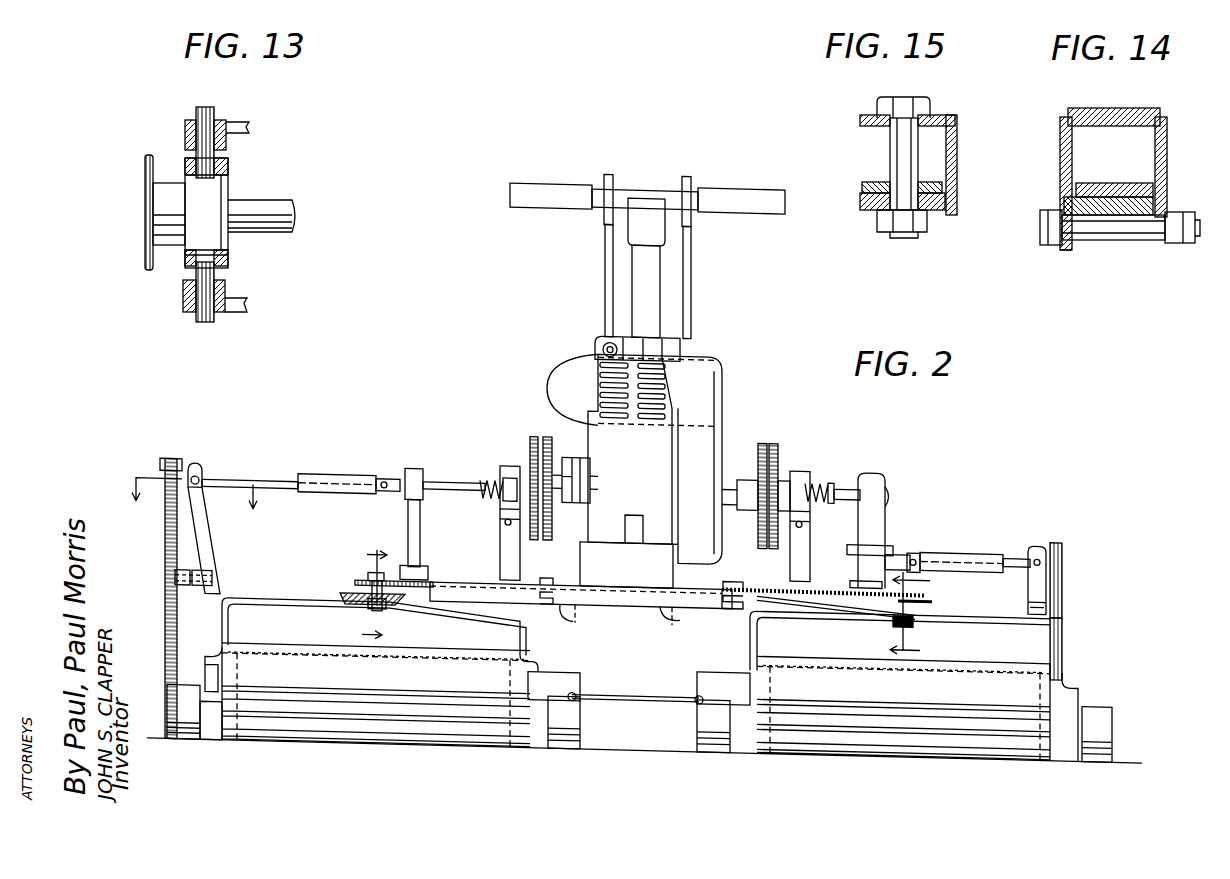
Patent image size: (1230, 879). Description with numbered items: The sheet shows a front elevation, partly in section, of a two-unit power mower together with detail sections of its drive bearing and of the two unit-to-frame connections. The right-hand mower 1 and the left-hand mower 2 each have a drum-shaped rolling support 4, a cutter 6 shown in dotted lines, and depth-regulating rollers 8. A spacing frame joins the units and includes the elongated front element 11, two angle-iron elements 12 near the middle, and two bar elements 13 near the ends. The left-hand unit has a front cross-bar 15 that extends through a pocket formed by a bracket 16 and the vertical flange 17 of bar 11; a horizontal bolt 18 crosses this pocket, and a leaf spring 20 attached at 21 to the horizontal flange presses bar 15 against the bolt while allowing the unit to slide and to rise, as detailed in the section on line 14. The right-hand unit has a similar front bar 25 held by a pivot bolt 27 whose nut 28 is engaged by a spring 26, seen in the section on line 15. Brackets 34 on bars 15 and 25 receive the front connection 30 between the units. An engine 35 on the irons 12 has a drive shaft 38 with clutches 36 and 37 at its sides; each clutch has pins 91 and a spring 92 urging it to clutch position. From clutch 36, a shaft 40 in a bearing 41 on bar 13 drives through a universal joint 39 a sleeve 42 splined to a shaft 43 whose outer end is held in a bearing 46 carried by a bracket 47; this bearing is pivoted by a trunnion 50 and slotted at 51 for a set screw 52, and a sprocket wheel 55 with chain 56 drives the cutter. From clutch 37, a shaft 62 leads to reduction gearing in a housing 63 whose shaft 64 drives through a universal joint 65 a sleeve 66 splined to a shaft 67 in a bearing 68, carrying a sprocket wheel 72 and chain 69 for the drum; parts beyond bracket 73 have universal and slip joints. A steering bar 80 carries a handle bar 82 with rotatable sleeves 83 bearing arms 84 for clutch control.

In FIG. 2, the right-hand mower 1 is at (350, 736).
In FIG. 2, the left-hand mower 2 is at (888, 733).
In FIG. 2, the rolling support 4 is at (270, 594).
In FIG. 2, the cutter 6 is at (270, 647).
In FIG. 2, the rollers 8 is at (185, 739).
In FIG. 15, the front frame element 11 is at (957, 131).
In FIG. 14, the front frame element 11 is at (1165, 127).
In FIG. 2, the front frame element 11 is at (630, 595).
In FIG. 2, the angle iron frame elements 12 is at (575, 597).
In FIG. 2, the bar frame elements 13 is at (440, 554).
In FIG. 2, the section line 14— 14 is at (942, 618).
In FIG. 14, the cross-bar 15 is at (1122, 216).
In FIG. 2, the cross-bar 15 is at (985, 580).
In FIG. 14, the bracket 16 is at (1167, 173).
In FIG. 2, the bracket 16 is at (932, 582).
In FIG. 14, the vertical flange 17 is at (1061, 166).
In FIG. 2, the vertical flange 17 is at (710, 593).
In FIG. 14, the bolt 18 is at (1090, 246).
In FIG. 2, the bolt 18 is at (893, 603).
In FIG. 14, the leaf spring 20 is at (1115, 183).
In FIG. 2, the leaf spring 20 is at (790, 584).
In FIG. 2, the spring attachment 21 is at (548, 568).
In FIG. 15, the front bar 25 is at (868, 206).
In FIG. 2, the front bar 25 is at (247, 594).
In FIG. 15, the spring 26 is at (870, 187).
In FIG. 2, the spring 26 is at (350, 591).
In FIG. 15, the pivot bolt 27 is at (918, 100).
In FIG. 2, the pivot bolt 27 is at (370, 567).
In FIG. 2, the nut 28 is at (368, 598).
In FIG. 2, the front connection 30 is at (635, 689).
In FIG. 2, the brackets 34 is at (580, 676).
In FIG. 2, the engine 35 is at (658, 437).
In FIG. 2, the clutch 36 is at (530, 427).
In FIG. 2, the clutch 37 is at (773, 427).
In FIG. 2, the drive shaft 38 is at (580, 479).
In FIG. 2, the universal joint 39 is at (384, 471).
In FIG. 2, the shaft 40 is at (440, 474).
In FIG. 2, the bearing 41 is at (414, 460).
In FIG. 2, the sleeve 42 is at (318, 471).
In FIG. 13, the shaft 43 is at (287, 211).
In FIG. 2, the shaft 43 is at (258, 478).
In FIG. 13, the bearing 46 is at (218, 186).
In FIG. 2, the bearing 46 is at (197, 462).
In FIG. 13, the bracket 47 is at (232, 310).
In FIG. 2, the bracket 47 is at (205, 512).
In FIG. 13, the trunnion 50 is at (195, 143).
In FIG. 13, the slot 51 is at (222, 264).
In FIG. 13, the set screw 52 is at (195, 288).
In FIG. 13, the sprocket wheel 55 is at (143, 249).
In FIG. 2, the sprocket wheel 55 is at (167, 462).
In FIG. 2, the chain 56 is at (167, 541).
In FIG. 2, the shaft 62 is at (846, 470).
In FIG. 2, the housing 63 is at (870, 455).
In FIG. 2, the shaft 64 is at (895, 536).
In FIG. 2, the universal joint 65 is at (917, 536).
In FIG. 2, the sleeve 66 is at (948, 533).
In FIG. 2, the shaft 67 is at (1010, 537).
In FIG. 2, the bearing 68 is at (1037, 526).
In FIG. 2, the chain 69 is at (1063, 573).
In FIG. 2, the sprocket wheel 72 is at (1063, 533).
In FIG. 2, the bracket 73 is at (420, 529).
In FIG. 2, the steering bar 80 is at (652, 270).
In FIG. 2, the handle bar 82 is at (645, 178).
In FIG. 2, the sleeve 83 is at (545, 177).
In FIG. 2, the arm 84 is at (612, 167).
In FIG. 2, the pins 91 is at (500, 502).
In FIG. 2, the spring 92 is at (492, 469).